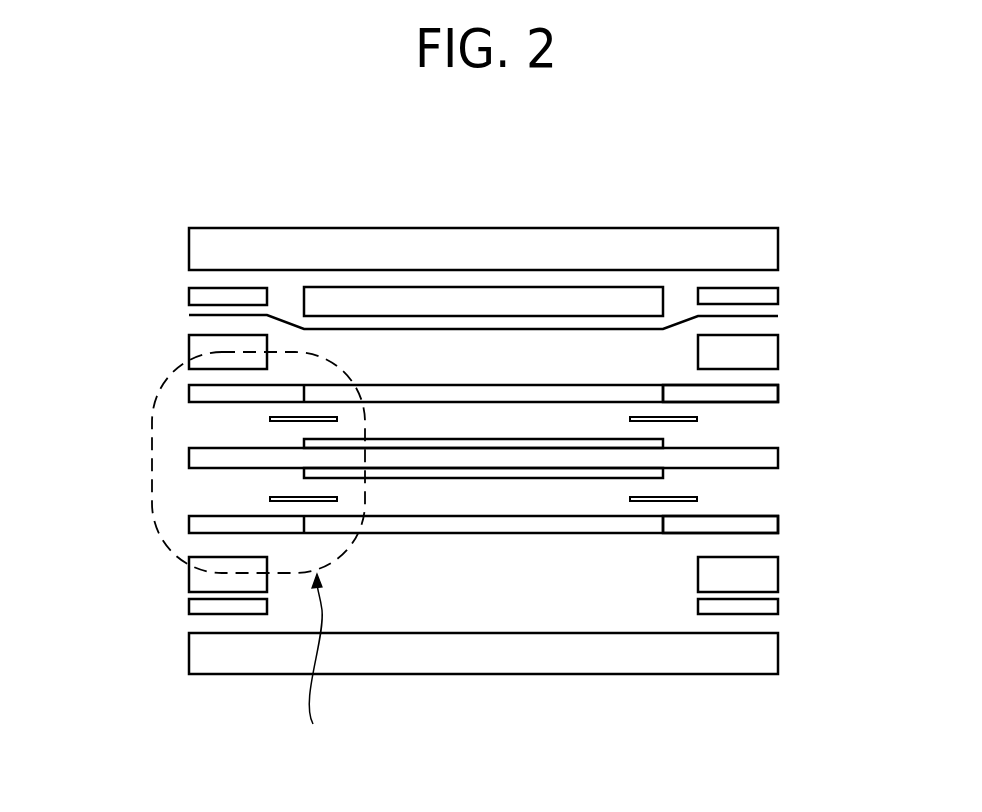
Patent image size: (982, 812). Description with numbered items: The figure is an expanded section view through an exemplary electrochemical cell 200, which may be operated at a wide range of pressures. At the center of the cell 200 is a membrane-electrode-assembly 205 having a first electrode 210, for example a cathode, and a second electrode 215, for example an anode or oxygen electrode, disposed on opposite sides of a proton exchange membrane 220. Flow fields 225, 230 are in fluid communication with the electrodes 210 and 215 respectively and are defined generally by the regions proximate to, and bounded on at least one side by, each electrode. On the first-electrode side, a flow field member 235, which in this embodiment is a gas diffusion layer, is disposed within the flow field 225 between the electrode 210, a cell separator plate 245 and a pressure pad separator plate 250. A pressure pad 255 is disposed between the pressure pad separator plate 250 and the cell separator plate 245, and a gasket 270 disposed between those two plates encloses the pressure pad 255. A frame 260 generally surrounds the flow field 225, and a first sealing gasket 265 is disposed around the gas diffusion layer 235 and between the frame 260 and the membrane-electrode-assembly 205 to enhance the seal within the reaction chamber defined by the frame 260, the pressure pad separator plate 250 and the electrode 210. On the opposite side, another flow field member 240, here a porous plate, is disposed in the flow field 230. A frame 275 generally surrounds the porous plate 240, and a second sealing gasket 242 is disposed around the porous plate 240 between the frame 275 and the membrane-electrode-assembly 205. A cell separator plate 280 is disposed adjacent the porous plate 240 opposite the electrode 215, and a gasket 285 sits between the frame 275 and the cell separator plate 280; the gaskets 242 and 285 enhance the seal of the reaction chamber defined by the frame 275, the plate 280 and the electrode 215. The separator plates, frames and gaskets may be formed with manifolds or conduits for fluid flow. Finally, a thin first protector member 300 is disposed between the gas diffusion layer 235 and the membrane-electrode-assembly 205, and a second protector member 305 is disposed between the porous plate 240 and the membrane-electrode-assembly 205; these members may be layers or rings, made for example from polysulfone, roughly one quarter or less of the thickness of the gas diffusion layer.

The electrochemical cell 200 is at (653, 203).
The membrane-electrode-assembly 205 is at (189, 459).
The first electrode 210 is at (563, 438).
The second electrode 215 is at (537, 479).
The proton exchange membrane 220 is at (778, 458).
The flow field 225 is at (455, 370).
The flow field 230 is at (493, 592).
The flow field member 235 is at (533, 385).
The flow field member 240 is at (560, 533).
The second sealing gasket 242 is at (745, 516).
The cell separator plate 245 is at (189, 249).
The pressure pad separator plate 250 is at (189, 315).
The pressure pad 255 is at (358, 287).
The frame 260 is at (189, 352).
The first sealing gasket 265 is at (758, 402).
The gasket 270 is at (778, 296).
The frame 275 is at (189, 581).
The cell separator plate 280 is at (189, 651).
The gasket 285 is at (778, 606).
The first protector member 300 is at (270, 420).
The second protector member 305 is at (272, 497).